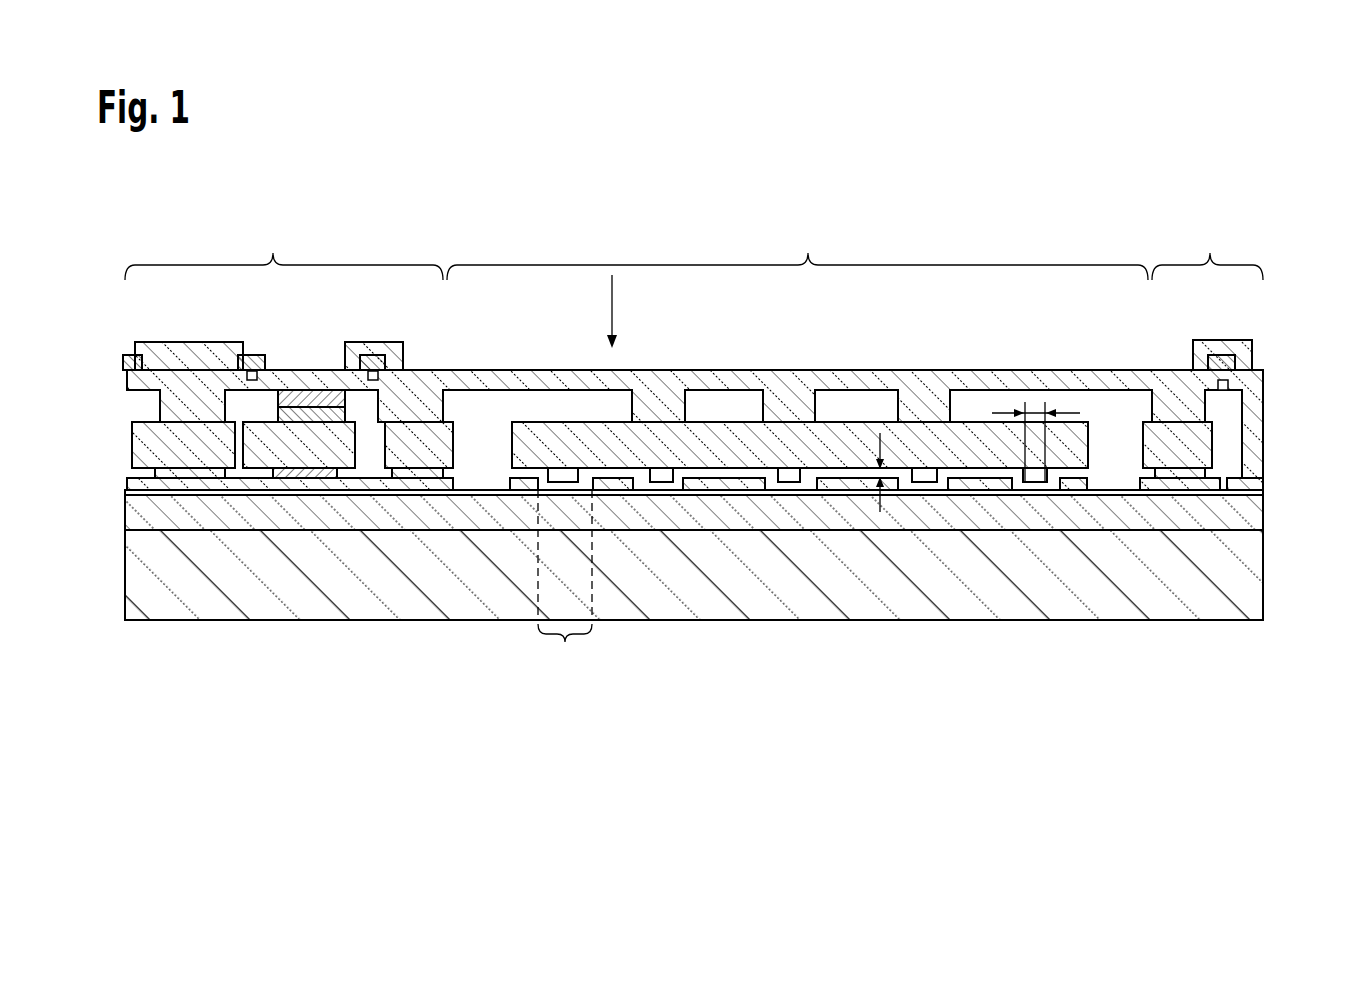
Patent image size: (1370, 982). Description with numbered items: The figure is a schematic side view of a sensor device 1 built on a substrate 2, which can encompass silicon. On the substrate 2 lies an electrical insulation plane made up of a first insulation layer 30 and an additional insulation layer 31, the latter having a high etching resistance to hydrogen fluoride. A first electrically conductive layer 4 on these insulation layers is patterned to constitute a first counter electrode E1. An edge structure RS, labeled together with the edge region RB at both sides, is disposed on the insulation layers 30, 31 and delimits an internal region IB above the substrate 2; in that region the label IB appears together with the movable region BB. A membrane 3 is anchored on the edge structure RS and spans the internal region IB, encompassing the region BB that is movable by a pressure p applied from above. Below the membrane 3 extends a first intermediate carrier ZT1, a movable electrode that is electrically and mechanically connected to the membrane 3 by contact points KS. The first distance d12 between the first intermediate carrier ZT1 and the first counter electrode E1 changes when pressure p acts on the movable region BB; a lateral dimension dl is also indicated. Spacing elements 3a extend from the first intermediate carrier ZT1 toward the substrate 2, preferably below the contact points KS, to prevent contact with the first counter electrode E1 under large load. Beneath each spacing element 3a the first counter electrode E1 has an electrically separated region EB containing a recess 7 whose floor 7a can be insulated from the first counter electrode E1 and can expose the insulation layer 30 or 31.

The sensor device 1 is at (1186, 160).
The substrate 2 is at (1255, 597).
The membrane 3 is at (697, 390).
The spacing element 3a is at (567, 468).
The first electrically conductive layer 4 is at (243, 486).
The recess 7 is at (646, 477).
The floor 7a is at (546, 478).
The first insulation layer 30 is at (1255, 514).
The additional insulation layer 31 is at (1264, 492).
The first counter electrode E1 is at (522, 483).
The separated region EB is at (565, 584).
The contact points KS is at (785, 393).
The first intermediate carrier ZT1 is at (977, 450).
The distance dl is at (1034, 411).
The first distance d12 is at (882, 500).
The pressure p is at (621, 311).
The edge region RB is at (690, 251).
The edge structure RS is at (774, 251).
The internal region IB is at (797, 251).
The movable region BB is at (828, 237).